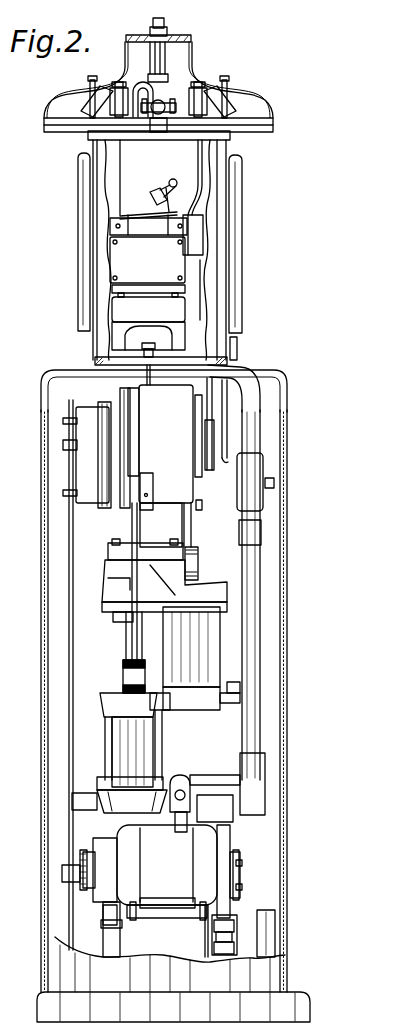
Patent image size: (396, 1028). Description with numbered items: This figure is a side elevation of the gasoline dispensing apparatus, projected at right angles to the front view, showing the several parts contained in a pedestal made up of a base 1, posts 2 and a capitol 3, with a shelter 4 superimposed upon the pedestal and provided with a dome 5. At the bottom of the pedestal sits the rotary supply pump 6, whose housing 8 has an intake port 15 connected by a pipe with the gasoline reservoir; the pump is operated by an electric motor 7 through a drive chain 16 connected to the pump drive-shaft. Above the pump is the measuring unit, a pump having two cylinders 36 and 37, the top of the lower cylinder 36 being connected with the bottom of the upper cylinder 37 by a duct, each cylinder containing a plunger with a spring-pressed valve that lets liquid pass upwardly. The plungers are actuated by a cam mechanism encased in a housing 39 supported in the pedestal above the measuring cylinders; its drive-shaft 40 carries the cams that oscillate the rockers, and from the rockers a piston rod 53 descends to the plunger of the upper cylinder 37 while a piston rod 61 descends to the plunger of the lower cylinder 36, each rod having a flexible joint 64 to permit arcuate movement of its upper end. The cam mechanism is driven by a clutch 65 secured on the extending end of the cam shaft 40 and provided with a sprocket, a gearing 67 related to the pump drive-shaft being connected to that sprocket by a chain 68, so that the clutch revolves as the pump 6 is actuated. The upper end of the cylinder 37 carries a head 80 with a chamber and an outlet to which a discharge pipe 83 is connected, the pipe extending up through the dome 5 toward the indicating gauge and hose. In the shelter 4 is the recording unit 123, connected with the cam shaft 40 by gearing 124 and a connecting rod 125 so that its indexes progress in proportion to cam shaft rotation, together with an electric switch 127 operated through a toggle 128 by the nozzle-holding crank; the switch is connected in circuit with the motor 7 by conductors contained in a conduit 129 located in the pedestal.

The base 1 is at (48, 995).
The posts 2 is at (104, 939).
The capitol 3 is at (284, 376).
The shelter 4 is at (220, 223).
The dome 5 is at (274, 85).
The pump 6 is at (229, 838).
The electric motor 7 is at (160, 875).
The housing 8 is at (246, 878).
The intake port 15 is at (231, 949).
The drive chain 16 is at (86, 893).
The cylinder 36 is at (119, 753).
The cylinder 37 is at (195, 693).
The housing 39 is at (170, 466).
The drive-shaft 40 is at (118, 505).
The piston rod 53 is at (193, 526).
The piston rod 61 is at (141, 598).
The flexible joint 64 is at (196, 505).
The clutch 65 is at (86, 505).
The gearing 67 is at (94, 844).
The chain 68 is at (68, 562).
The head 80 is at (197, 584).
The discharge pipe 83 is at (160, 98).
The recording unit 123 is at (243, 258).
The gearing 124 is at (216, 437).
The connecting rod 125 is at (287, 384).
The electric switch 127 is at (148, 300).
The toggle 128 is at (163, 186).
The conduit 129 is at (262, 607).